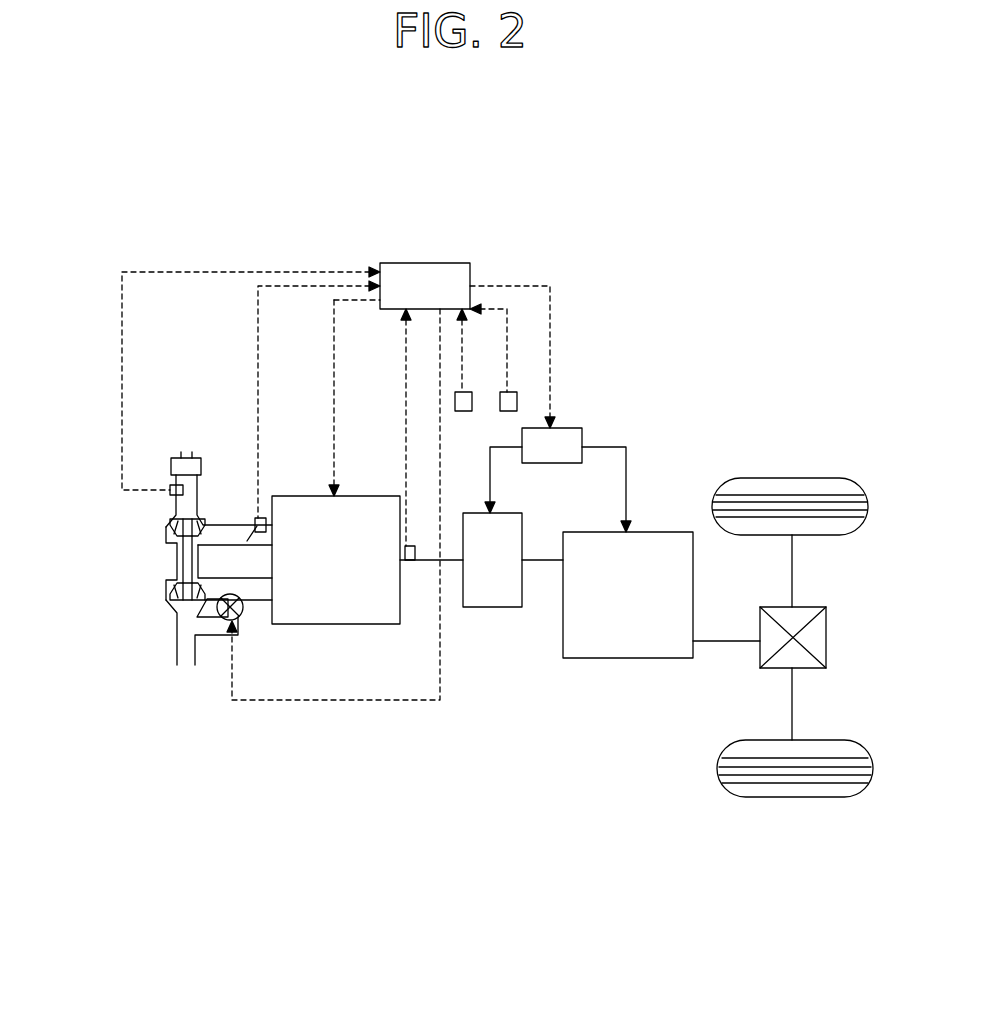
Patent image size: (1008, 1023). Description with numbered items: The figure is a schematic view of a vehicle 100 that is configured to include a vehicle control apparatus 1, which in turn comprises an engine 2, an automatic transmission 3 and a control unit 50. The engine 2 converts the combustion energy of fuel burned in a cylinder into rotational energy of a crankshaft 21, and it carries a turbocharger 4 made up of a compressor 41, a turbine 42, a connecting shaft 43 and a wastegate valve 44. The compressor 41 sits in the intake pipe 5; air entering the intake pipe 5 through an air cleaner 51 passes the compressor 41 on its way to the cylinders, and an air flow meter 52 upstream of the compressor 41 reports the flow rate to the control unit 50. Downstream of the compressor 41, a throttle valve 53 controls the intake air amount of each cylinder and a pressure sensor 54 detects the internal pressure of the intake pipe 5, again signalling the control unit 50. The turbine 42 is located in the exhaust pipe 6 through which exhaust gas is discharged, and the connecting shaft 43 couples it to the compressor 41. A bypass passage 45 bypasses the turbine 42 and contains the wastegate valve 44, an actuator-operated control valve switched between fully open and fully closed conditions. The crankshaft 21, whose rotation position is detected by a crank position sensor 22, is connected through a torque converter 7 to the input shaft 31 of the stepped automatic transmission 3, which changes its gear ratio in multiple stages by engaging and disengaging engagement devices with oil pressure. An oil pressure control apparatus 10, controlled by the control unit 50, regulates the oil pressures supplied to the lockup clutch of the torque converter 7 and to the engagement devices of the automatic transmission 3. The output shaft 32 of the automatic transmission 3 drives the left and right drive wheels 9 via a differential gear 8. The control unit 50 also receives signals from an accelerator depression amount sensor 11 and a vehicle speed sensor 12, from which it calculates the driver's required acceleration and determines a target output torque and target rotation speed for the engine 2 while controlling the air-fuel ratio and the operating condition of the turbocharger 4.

The vehicle 100 is at (238, 152).
The vehicle control apparatus 1 is at (548, 197).
The engine 2 is at (302, 496).
The automatic transmission 3 is at (660, 532).
The turbocharger 4 is at (90, 510).
The intake pipe 5 is at (215, 523).
The exhaust pipe 6 is at (254, 601).
The torque converter 7 is at (472, 513).
The differential gear 8 is at (826, 607).
The drive wheels 9 is at (792, 478).
The oil pressure control apparatus 10 is at (566, 428).
The accelerator depression amount sensor 11 is at (468, 392).
The vehicle speed sensor 12 is at (511, 392).
The crankshaft 21 is at (428, 559).
The crank position sensor 22 is at (412, 565).
The input shaft 31 is at (538, 563).
The output shaft 32 is at (730, 640).
The compressor 41 is at (168, 525).
The turbine 42 is at (168, 585).
The connecting shaft 43 is at (175, 557).
The wastegate valve 44 is at (196, 611).
The bypass passage 45 is at (204, 641).
The control unit 50 is at (463, 263).
The air cleaner 51 is at (188, 458).
The air flow meter 52 is at (171, 485).
The throttle valve 53 is at (245, 540).
The pressure sensor 54 is at (261, 518).